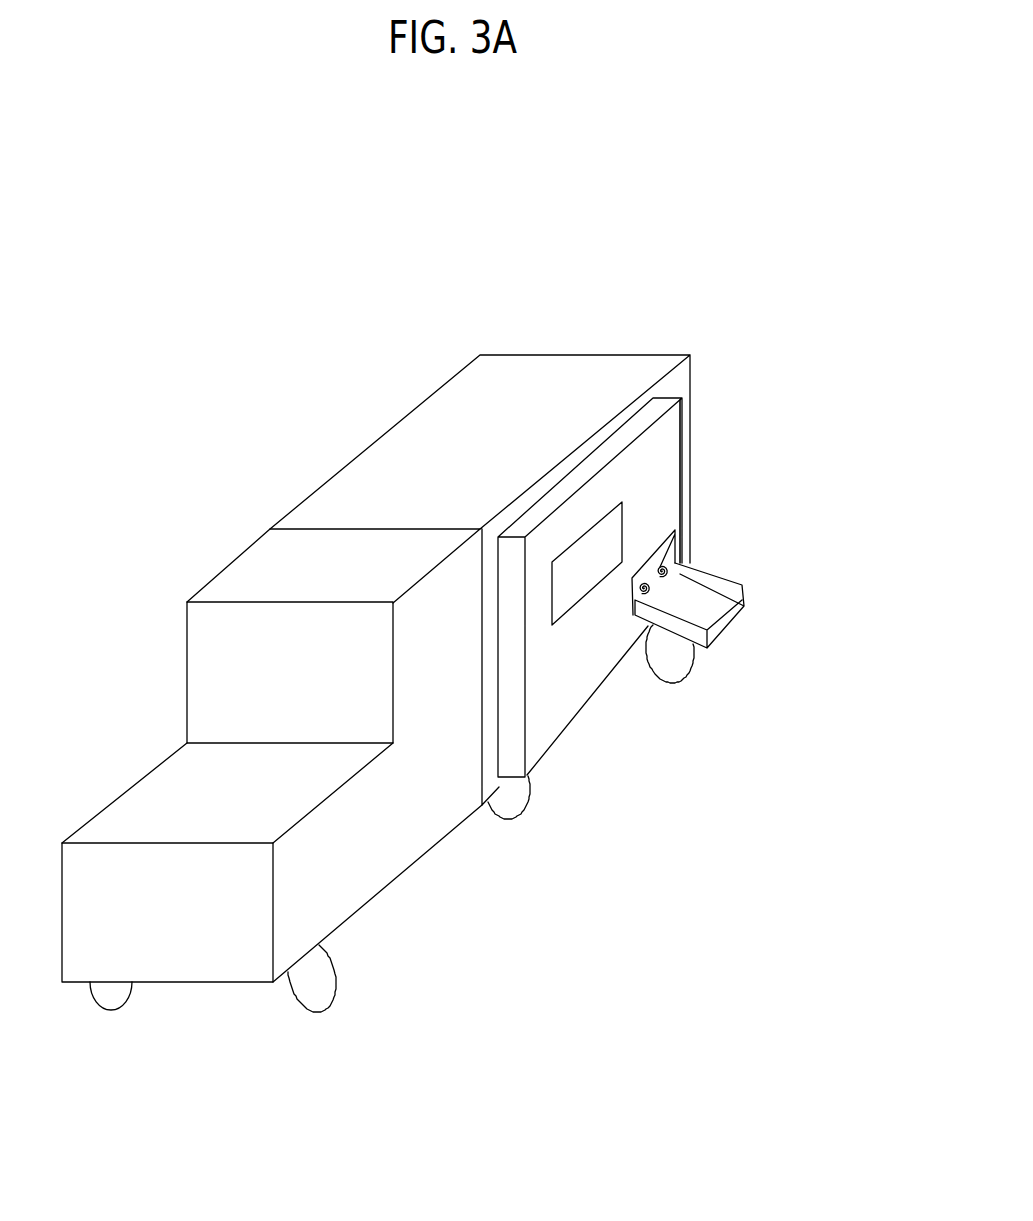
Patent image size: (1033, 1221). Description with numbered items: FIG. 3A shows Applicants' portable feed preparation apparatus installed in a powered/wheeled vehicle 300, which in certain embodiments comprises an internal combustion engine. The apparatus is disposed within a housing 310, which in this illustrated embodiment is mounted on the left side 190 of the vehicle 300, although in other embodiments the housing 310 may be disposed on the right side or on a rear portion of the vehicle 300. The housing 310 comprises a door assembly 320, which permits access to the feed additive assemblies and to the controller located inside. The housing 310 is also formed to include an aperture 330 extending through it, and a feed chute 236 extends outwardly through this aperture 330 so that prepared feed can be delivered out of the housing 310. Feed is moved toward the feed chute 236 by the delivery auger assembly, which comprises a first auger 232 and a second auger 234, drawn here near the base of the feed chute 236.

The powered/wheeled vehicle 300 is at (413, 755).
The side 190 is at (517, 580).
The housing 310 is at (628, 587).
The door assembly 320 is at (602, 568).
The aperture 330 is at (673, 552).
The first auger 232 is at (643, 584).
The second auger 234 is at (676, 532).
The feed chute 236 is at (708, 615).